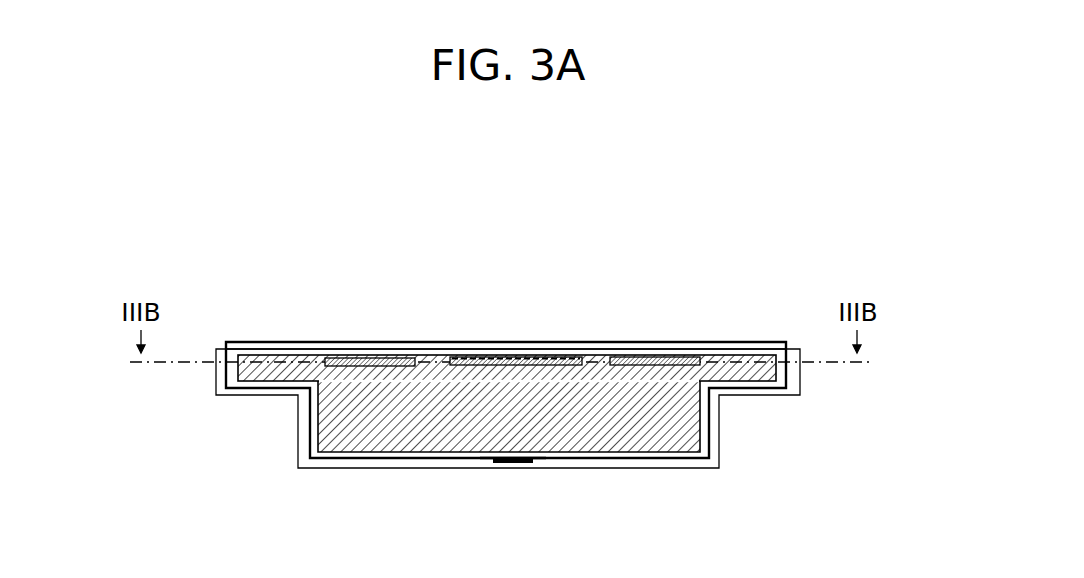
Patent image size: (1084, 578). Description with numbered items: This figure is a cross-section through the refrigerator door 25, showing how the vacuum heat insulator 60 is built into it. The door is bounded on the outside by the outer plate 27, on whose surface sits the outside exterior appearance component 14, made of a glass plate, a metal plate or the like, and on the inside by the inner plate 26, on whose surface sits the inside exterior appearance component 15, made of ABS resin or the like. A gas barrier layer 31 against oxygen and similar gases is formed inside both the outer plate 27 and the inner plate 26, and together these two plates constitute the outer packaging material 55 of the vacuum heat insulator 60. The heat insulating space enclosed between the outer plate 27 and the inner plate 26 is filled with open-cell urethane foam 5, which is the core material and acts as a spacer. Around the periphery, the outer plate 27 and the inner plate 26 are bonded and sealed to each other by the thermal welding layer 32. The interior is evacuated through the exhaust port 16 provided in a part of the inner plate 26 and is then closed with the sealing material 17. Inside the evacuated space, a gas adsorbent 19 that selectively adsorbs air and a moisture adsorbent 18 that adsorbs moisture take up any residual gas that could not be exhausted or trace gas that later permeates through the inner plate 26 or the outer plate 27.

The refrigerator door 25 is at (455, 277).
The open-cell urethane foam 5 is at (372, 415).
The outside exterior appearance component 14 is at (293, 344).
The inside exterior appearance component 15 is at (668, 463).
The exhaust port 16 is at (502, 453).
The sealing material 17 is at (517, 462).
The moisture adsorbent 18 is at (395, 357).
The gas adsorbent 19 is at (498, 356).
The inner plate 26 is at (710, 359).
The outer plate 27 is at (752, 349).
The gas barrier layer 31 is at (728, 385).
The thermal welding layer 32 is at (243, 347).
The outer packaging material 55 is at (799, 235).
The vacuum heat insulator 60 is at (556, 357).